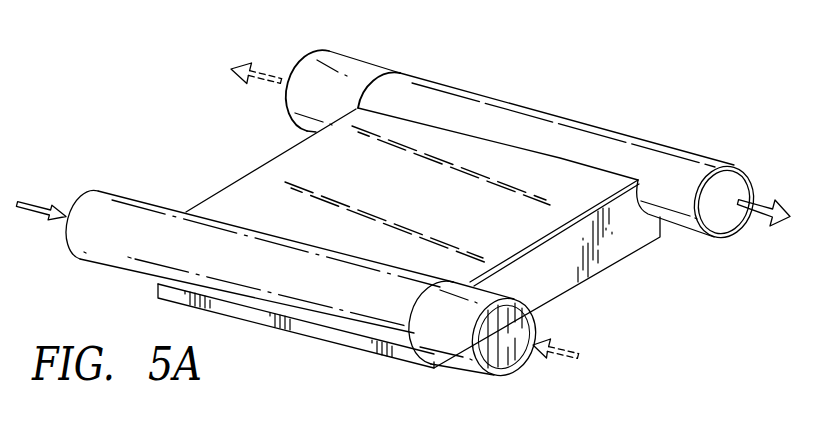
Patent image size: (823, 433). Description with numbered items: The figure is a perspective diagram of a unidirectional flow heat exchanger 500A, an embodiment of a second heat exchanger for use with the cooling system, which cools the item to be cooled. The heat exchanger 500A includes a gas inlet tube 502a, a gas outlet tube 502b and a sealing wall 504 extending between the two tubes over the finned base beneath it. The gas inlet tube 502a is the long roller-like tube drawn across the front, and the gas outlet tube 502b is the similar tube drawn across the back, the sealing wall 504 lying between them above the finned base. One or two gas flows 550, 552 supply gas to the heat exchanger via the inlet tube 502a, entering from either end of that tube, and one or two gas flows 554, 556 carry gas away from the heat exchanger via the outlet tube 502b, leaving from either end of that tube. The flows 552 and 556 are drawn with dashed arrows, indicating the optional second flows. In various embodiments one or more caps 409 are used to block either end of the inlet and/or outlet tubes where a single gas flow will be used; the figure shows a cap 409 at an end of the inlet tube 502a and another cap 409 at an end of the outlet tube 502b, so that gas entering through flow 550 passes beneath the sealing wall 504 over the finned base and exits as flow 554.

The unidirectional flow heat exchanger 500A is at (572, 78).
The gas inlet tube 502a is at (106, 213).
The gas outlet tube 502b is at (447, 106).
The sealing wall 504 is at (278, 156).
The cap 409 is at (292, 121).
The gas flow 550 is at (27, 203).
The gas flow 552 is at (562, 355).
The gas flow 554 is at (791, 217).
The gas flow 556 is at (262, 75).